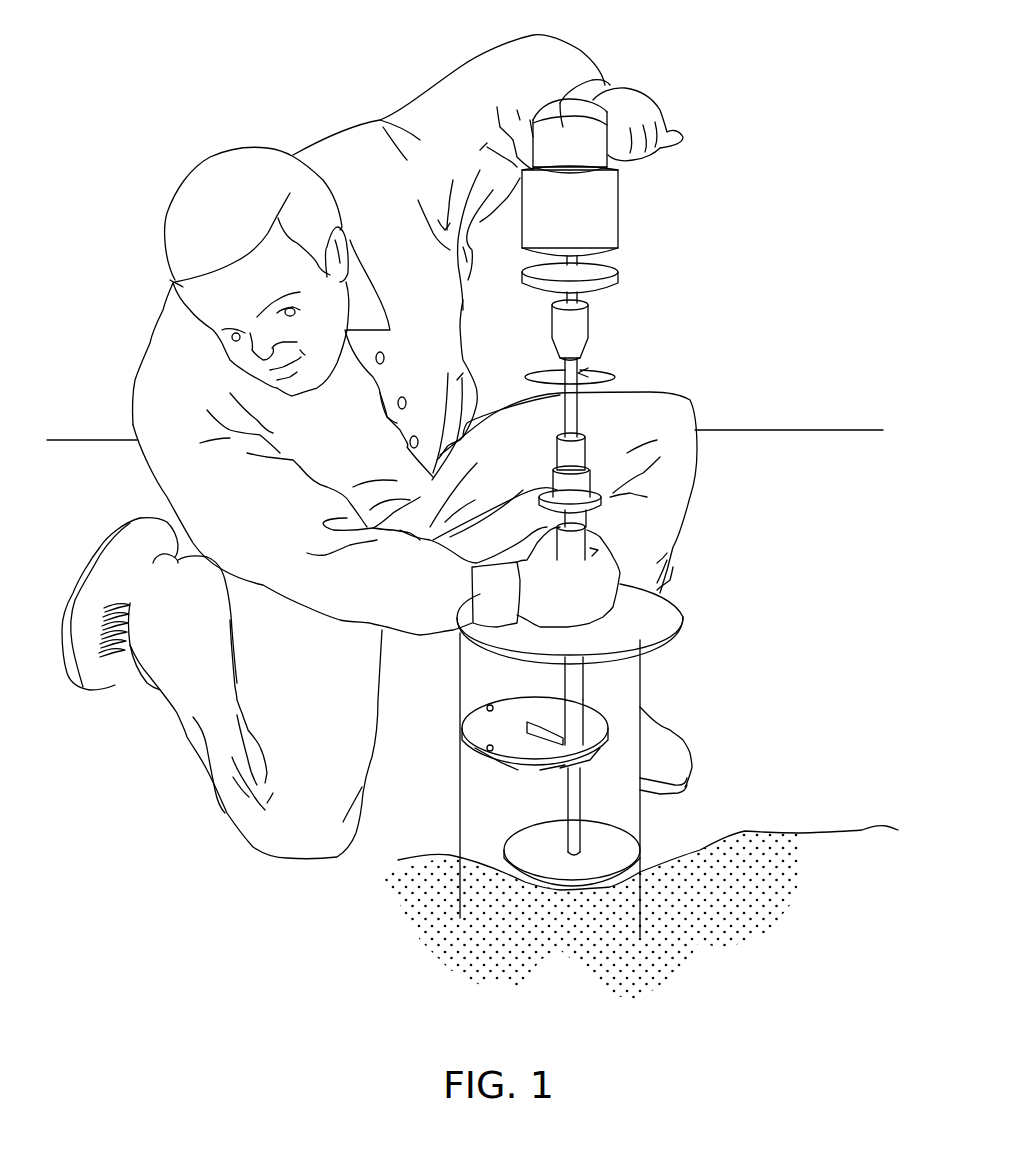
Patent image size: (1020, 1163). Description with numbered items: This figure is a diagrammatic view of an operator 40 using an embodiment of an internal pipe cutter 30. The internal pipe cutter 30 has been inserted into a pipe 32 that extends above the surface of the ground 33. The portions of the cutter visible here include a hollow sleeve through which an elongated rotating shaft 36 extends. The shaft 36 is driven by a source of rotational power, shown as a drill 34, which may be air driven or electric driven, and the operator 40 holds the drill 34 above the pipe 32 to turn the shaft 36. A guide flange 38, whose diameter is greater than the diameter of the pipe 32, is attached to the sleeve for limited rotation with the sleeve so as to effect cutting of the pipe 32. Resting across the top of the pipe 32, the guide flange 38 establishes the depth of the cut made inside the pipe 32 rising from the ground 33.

The internal pipe cutter 30 is at (752, 517).
The pipe 32 is at (640, 678).
The ground 33 is at (713, 967).
The drill 34 is at (590, 128).
The rotating shaft 36 is at (603, 413).
The guide flange 38 is at (683, 617).
The operator 40 is at (133, 427).